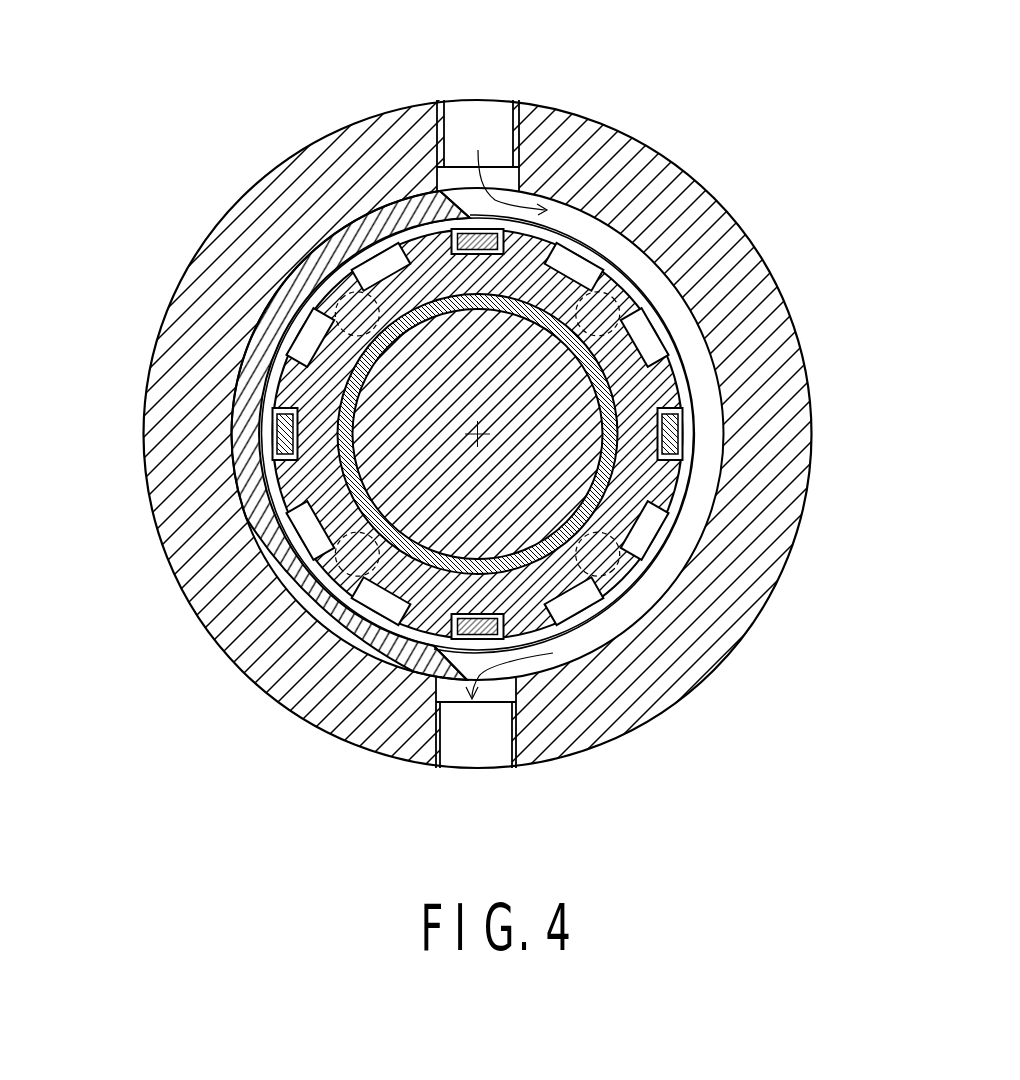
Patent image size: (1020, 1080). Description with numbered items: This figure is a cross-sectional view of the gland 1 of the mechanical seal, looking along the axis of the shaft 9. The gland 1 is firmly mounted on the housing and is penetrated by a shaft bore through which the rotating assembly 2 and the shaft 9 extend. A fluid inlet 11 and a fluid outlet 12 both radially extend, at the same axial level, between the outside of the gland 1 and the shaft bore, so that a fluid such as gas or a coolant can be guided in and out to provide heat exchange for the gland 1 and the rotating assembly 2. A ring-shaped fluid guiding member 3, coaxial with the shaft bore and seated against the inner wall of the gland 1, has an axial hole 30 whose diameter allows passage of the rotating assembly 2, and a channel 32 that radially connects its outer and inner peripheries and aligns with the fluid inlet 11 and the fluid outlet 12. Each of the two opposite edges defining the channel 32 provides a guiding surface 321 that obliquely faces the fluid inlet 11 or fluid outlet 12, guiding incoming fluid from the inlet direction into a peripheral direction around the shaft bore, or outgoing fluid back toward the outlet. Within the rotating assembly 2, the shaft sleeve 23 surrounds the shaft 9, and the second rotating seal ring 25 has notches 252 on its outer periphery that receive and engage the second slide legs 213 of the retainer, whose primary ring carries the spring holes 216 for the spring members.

The gland 1 is at (468, 434).
The rotating assembly 2 is at (556, 437).
The fluid guiding member 3 is at (425, 453).
The shaft 9 is at (548, 468).
The fluid inlet 11 is at (483, 108).
The fluid outlet 12 is at (490, 762).
The shaft sleeve 23 is at (620, 398).
The second rotating seal ring 25 is at (510, 364).
The axial hole 30 is at (280, 325).
The channel 32 is at (534, 417).
The second slide legs 213 is at (677, 431).
The spring holes 216 is at (625, 560).
The notches 252 is at (373, 253).
The guiding surface 321 is at (452, 207).